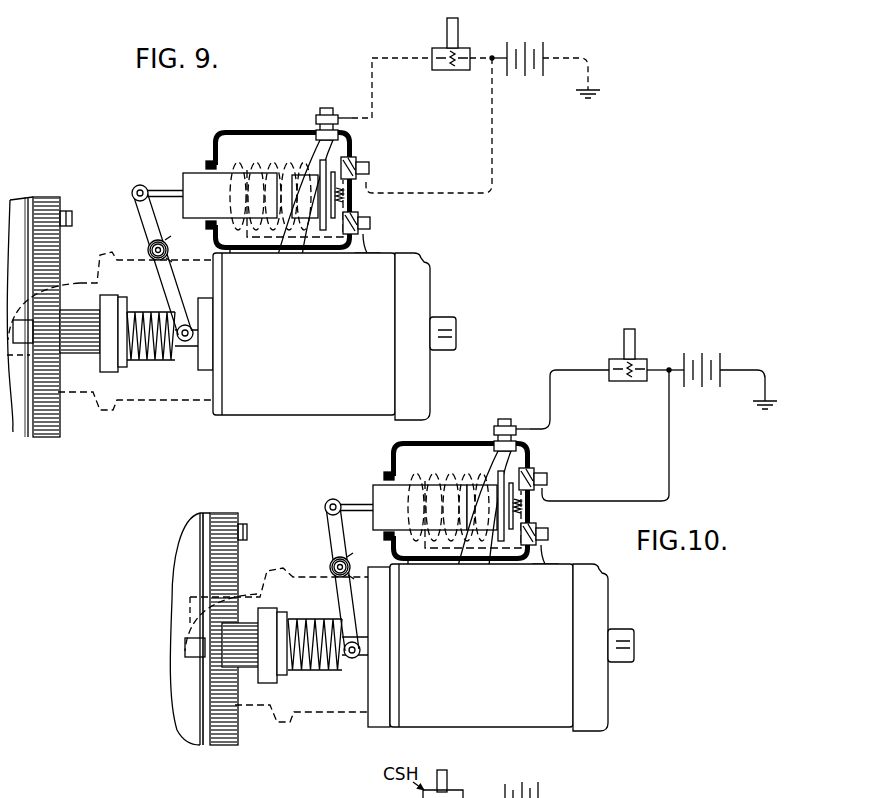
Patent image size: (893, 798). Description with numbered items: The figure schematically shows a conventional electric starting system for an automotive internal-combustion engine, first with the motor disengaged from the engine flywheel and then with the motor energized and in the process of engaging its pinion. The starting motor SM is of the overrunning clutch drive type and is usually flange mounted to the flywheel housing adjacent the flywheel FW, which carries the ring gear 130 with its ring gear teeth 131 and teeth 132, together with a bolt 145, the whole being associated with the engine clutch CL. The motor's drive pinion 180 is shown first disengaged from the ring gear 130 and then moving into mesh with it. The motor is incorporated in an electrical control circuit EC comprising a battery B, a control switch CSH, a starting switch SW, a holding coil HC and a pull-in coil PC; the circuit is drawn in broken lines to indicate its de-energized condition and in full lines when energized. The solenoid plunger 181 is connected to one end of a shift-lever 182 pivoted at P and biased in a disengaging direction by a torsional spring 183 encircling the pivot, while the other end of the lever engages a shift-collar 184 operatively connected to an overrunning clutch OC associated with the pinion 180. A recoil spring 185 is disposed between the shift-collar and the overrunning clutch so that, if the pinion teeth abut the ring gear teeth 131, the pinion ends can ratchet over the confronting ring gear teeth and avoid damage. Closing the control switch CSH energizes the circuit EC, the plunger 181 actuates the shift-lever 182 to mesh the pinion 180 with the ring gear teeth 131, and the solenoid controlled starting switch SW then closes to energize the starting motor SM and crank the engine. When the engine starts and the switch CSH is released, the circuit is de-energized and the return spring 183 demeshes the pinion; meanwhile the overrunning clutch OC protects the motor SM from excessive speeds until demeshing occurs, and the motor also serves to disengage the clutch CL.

In FIG. 9, the ring gear 130 is at (42, 433).
In FIG. 10, the ring gear 130 is at (223, 722).
In FIG. 9, the ring gear teeth 131 is at (58, 421).
In FIG. 10, the ring gear teeth 131 is at (232, 707).
In FIG. 9, the ring gear teeth 132 is at (30, 196).
In FIG. 10, the ring gear teeth 132 is at (203, 747).
In FIG. 9, the bolt 145 is at (67, 220).
In FIG. 10, the bolt 145 is at (249, 533).
In FIG. 9, the drive pinion 180 is at (82, 344).
In FIG. 10, the drive pinion 180 is at (247, 655).
In FIG. 9, the solenoid plunger 181 is at (258, 180).
In FIG. 10, the solenoid plunger 181 is at (445, 490).
In FIG. 9, the shift-lever 182 is at (142, 218).
In FIG. 10, the shift-lever 182 is at (330, 518).
In FIG. 9, the torsional spring 183 is at (173, 241).
In FIG. 10, the torsional spring 183 is at (350, 563).
In FIG. 9, the shift-collar 184 is at (188, 352).
In FIG. 10, the shift-collar 184 is at (358, 665).
In FIG. 9, the recoil spring 185 is at (153, 322).
In FIG. 10, the recoil spring 185 is at (313, 663).
In FIG. 9, the flywheel FW is at (13, 432).
In FIG. 10, the flywheel FW is at (173, 621).
In FIG. 9, the clutch CL is at (14, 182).
In FIG. 10, the clutch CL is at (195, 498).
In FIG. 9, the overrunning clutch OC is at (106, 304).
In FIG. 10, the overrunning clutch OC is at (270, 613).
In FIG. 9, the pivot P is at (150, 251).
In FIG. 10, the pivot P is at (332, 565).
In FIG. 9, the pull-in coil PC is at (289, 212).
In FIG. 10, the pull-in coil PC is at (468, 522).
In FIG. 9, the holding coil HC is at (312, 217).
In FIG. 10, the holding coil HC is at (494, 527).
In FIG. 9, the starting switch SW is at (363, 200).
In FIG. 10, the starting switch SW is at (536, 512).
In FIG. 9, the starting motor SM is at (360, 365).
In FIG. 10, the starting motor SM is at (521, 676).
In FIG. 9, the electrical control circuit EC is at (489, 106).
In FIG. 10, the electrical control circuit EC is at (665, 435).
In FIG. 9, the control switch CSH is at (436, 52).
In FIG. 10, the control switch CSH is at (612, 357).
In FIG. 9, the battery B is at (533, 80).
In FIG. 10, the battery B is at (707, 390).